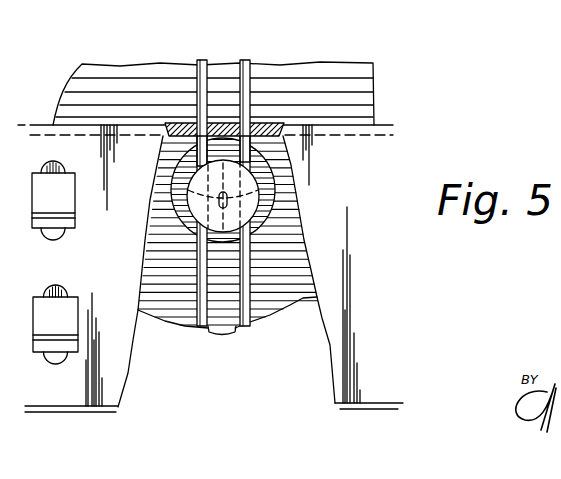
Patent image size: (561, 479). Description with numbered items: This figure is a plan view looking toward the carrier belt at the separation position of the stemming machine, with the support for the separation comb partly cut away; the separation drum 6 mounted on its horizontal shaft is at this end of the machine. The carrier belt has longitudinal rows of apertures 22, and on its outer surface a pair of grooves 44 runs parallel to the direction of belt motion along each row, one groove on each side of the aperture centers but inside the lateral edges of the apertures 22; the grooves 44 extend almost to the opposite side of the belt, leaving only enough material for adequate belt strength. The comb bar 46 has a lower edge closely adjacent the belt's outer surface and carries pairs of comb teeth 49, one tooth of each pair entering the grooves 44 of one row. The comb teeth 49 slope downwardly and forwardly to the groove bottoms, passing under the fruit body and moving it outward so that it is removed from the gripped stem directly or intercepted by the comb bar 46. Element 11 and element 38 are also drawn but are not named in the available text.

The support beam 11 is at (288, 72).
The separation drum 6 is at (222, 143).
The comb bar 46 is at (187, 124).
The grooves 44 is at (242, 62).
The comb teeth 49 is at (200, 150).
The apertures 22 is at (266, 178).
The pin 38 is at (233, 333).